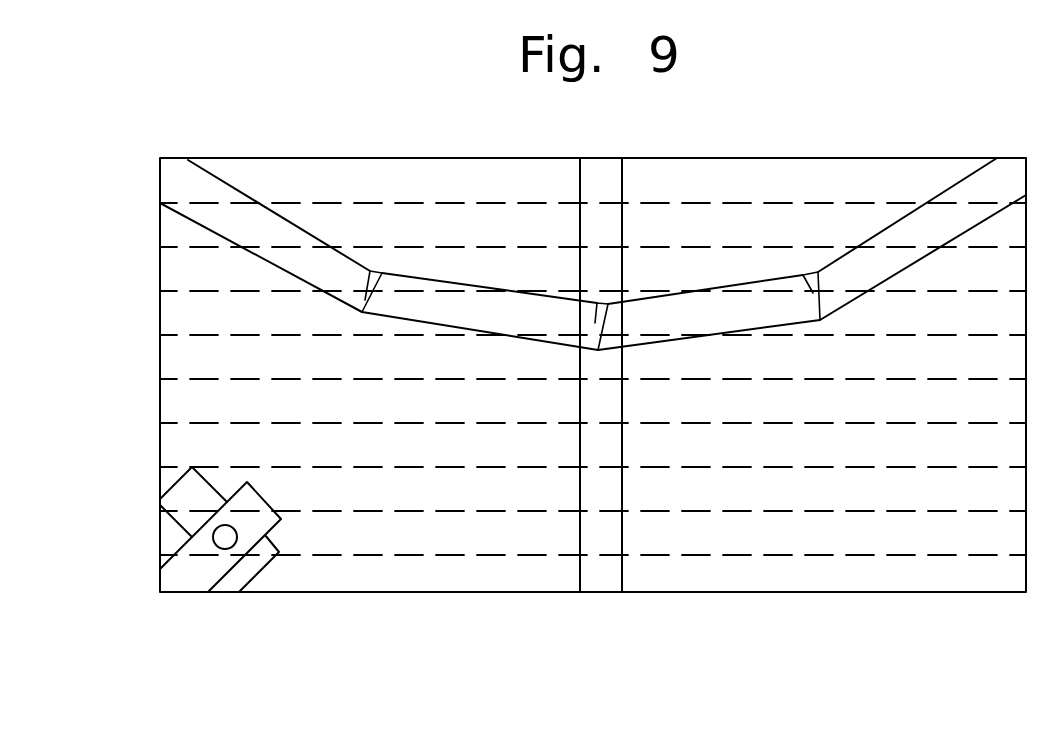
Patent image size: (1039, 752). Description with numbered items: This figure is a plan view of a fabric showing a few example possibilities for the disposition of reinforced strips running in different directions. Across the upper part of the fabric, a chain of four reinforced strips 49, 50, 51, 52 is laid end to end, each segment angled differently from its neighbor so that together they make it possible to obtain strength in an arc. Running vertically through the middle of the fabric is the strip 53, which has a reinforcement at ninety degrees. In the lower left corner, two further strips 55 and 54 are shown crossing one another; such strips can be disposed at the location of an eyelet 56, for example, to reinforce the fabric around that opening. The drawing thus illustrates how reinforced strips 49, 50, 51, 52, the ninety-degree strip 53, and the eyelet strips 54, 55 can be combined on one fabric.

The reinforced strip 49 is at (265, 222).
The reinforced strip 50 is at (448, 297).
The reinforced strip 51 is at (723, 308).
The reinforced strip 52 is at (880, 268).
The strip 53 is at (602, 575).
The strip 54 is at (247, 568).
The strip 55 is at (185, 575).
The eyelet 56 is at (225, 549).